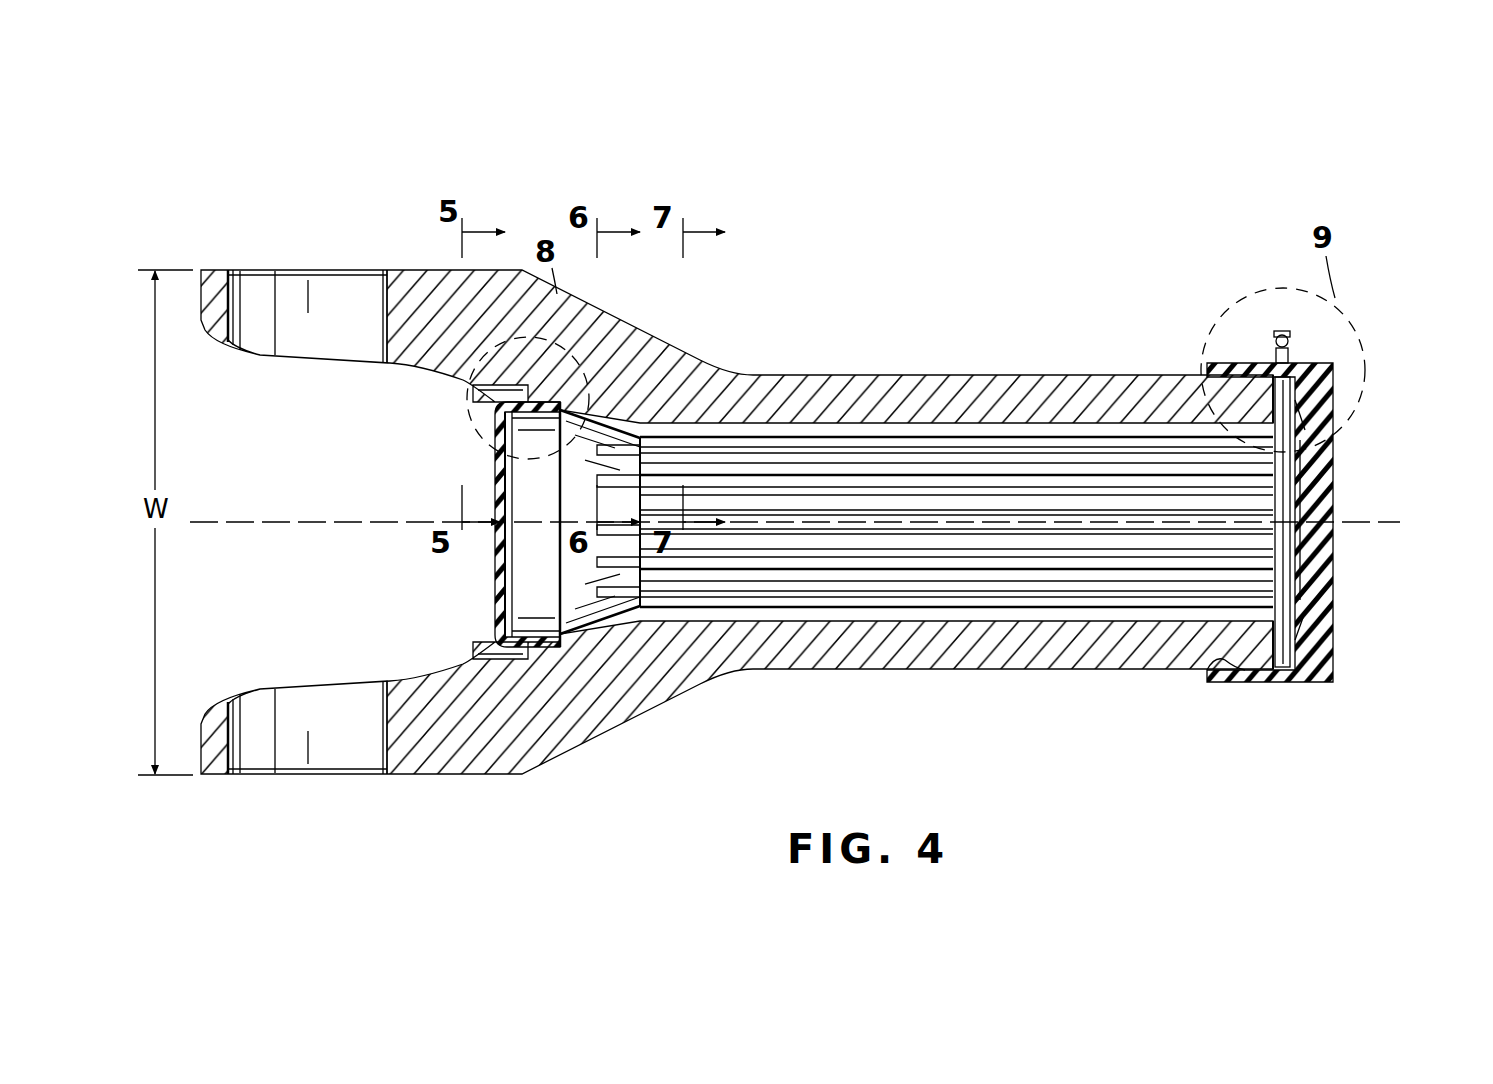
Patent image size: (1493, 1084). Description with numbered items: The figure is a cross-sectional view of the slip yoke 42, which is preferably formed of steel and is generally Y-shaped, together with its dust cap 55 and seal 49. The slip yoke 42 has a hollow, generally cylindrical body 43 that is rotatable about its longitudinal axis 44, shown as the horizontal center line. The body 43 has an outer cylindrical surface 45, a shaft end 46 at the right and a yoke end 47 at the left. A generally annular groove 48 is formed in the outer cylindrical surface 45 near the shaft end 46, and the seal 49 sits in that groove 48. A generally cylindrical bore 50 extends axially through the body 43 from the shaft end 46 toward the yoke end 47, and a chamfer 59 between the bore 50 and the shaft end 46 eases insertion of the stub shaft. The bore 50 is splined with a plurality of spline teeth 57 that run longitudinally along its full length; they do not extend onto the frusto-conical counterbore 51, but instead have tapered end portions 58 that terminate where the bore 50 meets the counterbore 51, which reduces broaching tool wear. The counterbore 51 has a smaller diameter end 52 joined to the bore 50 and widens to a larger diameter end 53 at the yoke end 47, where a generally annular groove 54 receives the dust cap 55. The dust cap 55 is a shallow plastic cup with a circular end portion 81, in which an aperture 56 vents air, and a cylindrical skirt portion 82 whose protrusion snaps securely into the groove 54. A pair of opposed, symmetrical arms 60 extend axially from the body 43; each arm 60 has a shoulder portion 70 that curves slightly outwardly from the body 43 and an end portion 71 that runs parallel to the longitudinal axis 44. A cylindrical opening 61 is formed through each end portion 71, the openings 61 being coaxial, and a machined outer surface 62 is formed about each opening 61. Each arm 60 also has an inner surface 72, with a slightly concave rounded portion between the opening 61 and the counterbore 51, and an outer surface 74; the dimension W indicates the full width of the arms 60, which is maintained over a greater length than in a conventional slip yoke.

The slip yoke 42 is at (938, 272).
The body 43 is at (942, 372).
The longitudinal axis 44 is at (268, 520).
The outer cylindrical surface 45 is at (978, 672).
The shaft end 46 is at (1266, 674).
The yoke end 47 is at (600, 642).
The annular groove 48 is at (1212, 663).
The seal 49 is at (1240, 368).
The bore 50 is at (804, 424).
The counterbore 51 is at (625, 624).
The smaller diameter end 52 is at (578, 632).
The larger diameter end 53 is at (500, 630).
The annular groove 54 is at (548, 650).
The dust cap 55 is at (488, 598).
The aperture 56 is at (498, 492).
The spline teeth 57 is at (1006, 445).
The tapered end portions 58 is at (640, 608).
The chamfer 59 is at (1270, 500).
The arms 60 is at (432, 268).
The opening 61 is at (232, 302).
The machined outer surface 62 is at (253, 777).
The shoulder portion 70 is at (608, 342).
The end portion 71 is at (447, 288).
The inner surface 72 is at (395, 364).
The outer surface 74 is at (408, 268).
The end portion 81 is at (495, 548).
The skirt portion 82 is at (500, 432).